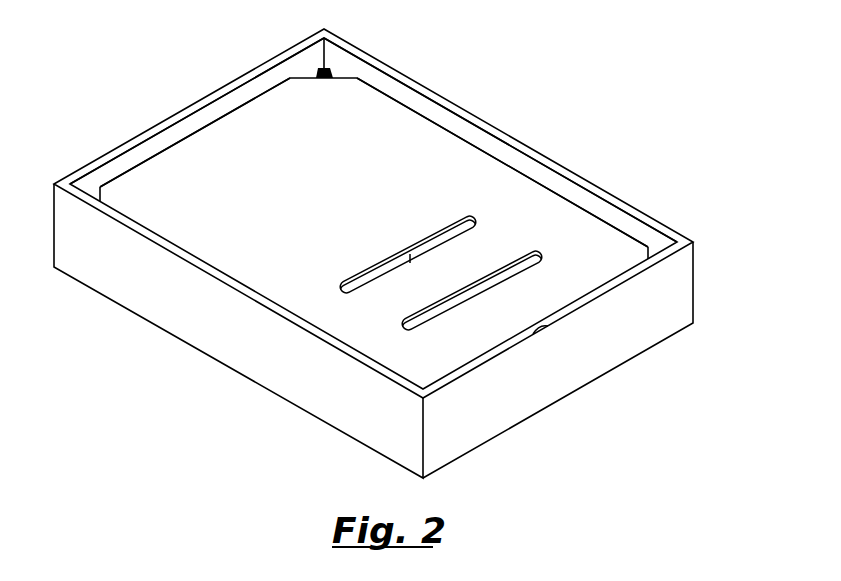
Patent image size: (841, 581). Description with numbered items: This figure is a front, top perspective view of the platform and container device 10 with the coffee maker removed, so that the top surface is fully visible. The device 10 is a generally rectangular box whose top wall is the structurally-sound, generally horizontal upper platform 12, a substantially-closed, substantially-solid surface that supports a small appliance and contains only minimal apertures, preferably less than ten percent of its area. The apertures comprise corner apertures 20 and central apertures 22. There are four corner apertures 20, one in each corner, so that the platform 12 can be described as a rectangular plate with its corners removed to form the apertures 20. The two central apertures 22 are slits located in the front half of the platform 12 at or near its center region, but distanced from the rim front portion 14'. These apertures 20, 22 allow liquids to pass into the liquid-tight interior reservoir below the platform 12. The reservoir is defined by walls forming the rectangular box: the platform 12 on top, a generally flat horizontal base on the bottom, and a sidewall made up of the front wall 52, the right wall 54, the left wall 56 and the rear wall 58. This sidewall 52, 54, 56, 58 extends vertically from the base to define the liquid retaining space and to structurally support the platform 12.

The platform and container device 10 is at (470, 100).
The upper platform 12 is at (303, 185).
The rim front portion 14' is at (607, 361).
The corner apertures 20 is at (99, 200).
The central apertures 22 is at (503, 272).
The front wall 52 is at (517, 403).
The right wall 54 is at (548, 175).
The left wall 56 is at (262, 359).
The rear wall 58 is at (177, 132).